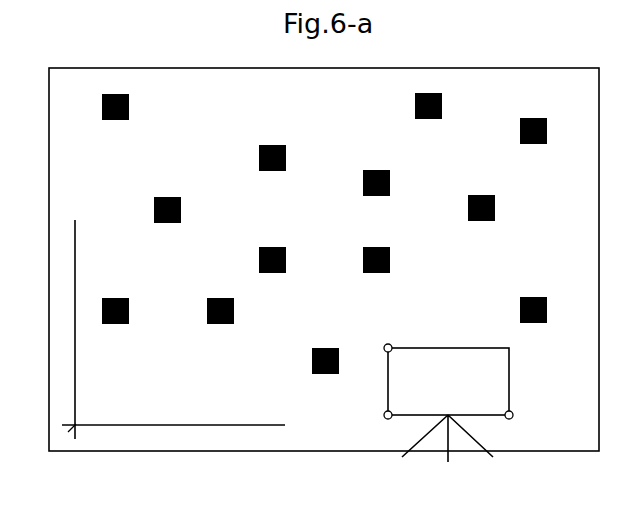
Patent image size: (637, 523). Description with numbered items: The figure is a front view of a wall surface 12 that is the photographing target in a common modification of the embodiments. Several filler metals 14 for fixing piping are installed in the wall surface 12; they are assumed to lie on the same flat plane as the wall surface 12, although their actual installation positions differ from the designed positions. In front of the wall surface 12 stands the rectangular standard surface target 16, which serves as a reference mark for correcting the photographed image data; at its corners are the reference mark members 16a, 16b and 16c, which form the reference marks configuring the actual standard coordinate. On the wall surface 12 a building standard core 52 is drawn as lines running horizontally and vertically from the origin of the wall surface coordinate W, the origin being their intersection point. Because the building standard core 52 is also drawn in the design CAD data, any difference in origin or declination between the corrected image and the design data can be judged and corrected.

The wall surface 12 is at (324, 259).
The filler metal 14 is at (115, 296).
The building standard core 52 is at (207, 423).
The wall surface coordinate W is at (72, 428).
The standard surface target 16 is at (437, 347).
The reference mark member 16a is at (384, 417).
The reference mark member 16b is at (513, 415).
The reference mark member 16c is at (388, 344).